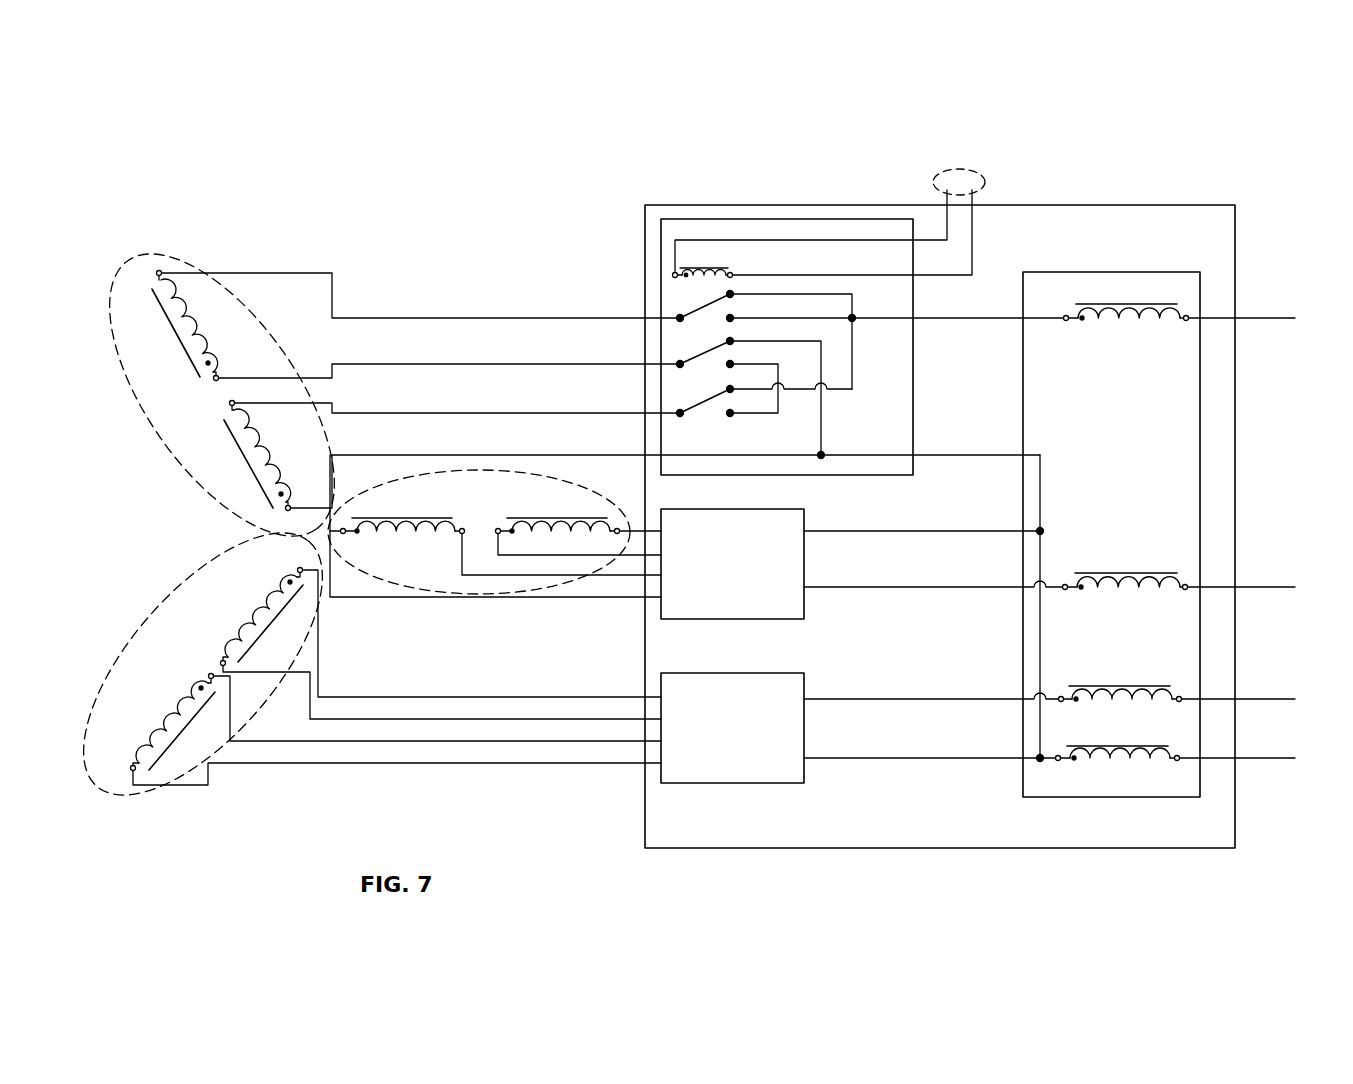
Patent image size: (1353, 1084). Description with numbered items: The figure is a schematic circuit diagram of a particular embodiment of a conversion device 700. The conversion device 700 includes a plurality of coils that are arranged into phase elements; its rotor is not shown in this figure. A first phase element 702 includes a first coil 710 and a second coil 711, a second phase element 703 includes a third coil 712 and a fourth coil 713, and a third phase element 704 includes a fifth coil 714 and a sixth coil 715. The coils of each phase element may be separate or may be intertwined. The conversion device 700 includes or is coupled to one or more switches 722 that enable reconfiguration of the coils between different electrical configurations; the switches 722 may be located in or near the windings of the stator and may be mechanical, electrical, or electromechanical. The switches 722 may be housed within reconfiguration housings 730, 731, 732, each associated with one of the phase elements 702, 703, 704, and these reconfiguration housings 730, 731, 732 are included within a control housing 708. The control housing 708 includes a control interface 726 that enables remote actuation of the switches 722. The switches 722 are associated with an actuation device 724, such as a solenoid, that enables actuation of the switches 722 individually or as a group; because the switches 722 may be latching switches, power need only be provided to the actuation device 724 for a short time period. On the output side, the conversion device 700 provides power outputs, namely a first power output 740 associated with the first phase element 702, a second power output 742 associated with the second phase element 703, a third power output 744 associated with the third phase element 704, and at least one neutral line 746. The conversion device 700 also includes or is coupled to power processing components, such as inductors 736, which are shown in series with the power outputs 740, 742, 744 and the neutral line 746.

The conversion device 700 is at (233, 163).
The first phase element 702 is at (168, 427).
The second phase element 703 is at (387, 583).
The third phase element 704 is at (157, 620).
The control housing 708 is at (655, 205).
The first coil 710 is at (181, 342).
The second coil 711 is at (249, 465).
The third coil 712 is at (398, 518).
The fourth coil 713 is at (540, 518).
The fifth coil 714 is at (272, 610).
The sixth coil 715 is at (178, 715).
The switches 722 is at (688, 307).
The actuation device 724 is at (698, 271).
The control interface 726 is at (972, 172).
The reconfiguration housing 730 is at (709, 475).
The reconfiguration housing 731 is at (708, 620).
The reconfiguration housing 732 is at (708, 784).
The inductors 736 is at (1113, 272).
The first power output 740 is at (1250, 318).
The second power output 742 is at (1250, 587).
The third power output 744 is at (1250, 699).
The neutral line 746 is at (1250, 758).